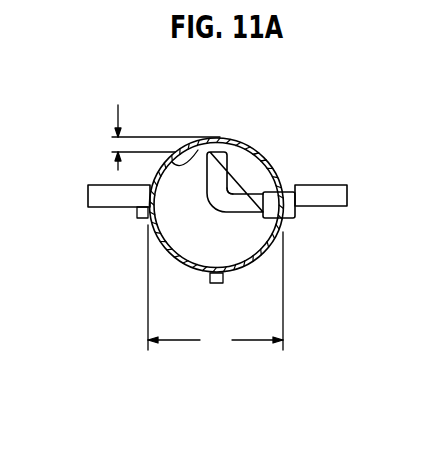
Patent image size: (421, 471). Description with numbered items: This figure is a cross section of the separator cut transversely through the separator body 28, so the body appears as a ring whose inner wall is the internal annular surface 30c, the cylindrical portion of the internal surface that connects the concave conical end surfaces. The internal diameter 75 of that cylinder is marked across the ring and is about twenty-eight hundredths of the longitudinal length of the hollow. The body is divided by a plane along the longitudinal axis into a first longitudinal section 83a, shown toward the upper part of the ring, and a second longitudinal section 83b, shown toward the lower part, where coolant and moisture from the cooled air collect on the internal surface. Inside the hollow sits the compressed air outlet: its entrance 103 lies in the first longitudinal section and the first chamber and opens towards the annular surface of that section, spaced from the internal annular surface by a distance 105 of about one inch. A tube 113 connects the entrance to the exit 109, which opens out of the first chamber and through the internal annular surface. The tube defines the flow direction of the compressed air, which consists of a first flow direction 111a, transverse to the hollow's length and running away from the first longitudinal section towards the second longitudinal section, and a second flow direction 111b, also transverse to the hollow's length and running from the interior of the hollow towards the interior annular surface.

The separator body 28 is at (276, 160).
The internal annular surface 30c is at (197, 138).
The internal diameter 75 is at (215, 290).
The first longitudinal section 83a is at (259, 152).
The second longitudinal section 83b is at (213, 276).
The entrance 103 is at (213, 152).
The distance 105 is at (115, 144).
The exit 109 is at (297, 218).
The first flow direction 111a is at (249, 148).
The second flow direction 111b is at (254, 205).
The tube 113 is at (228, 193).